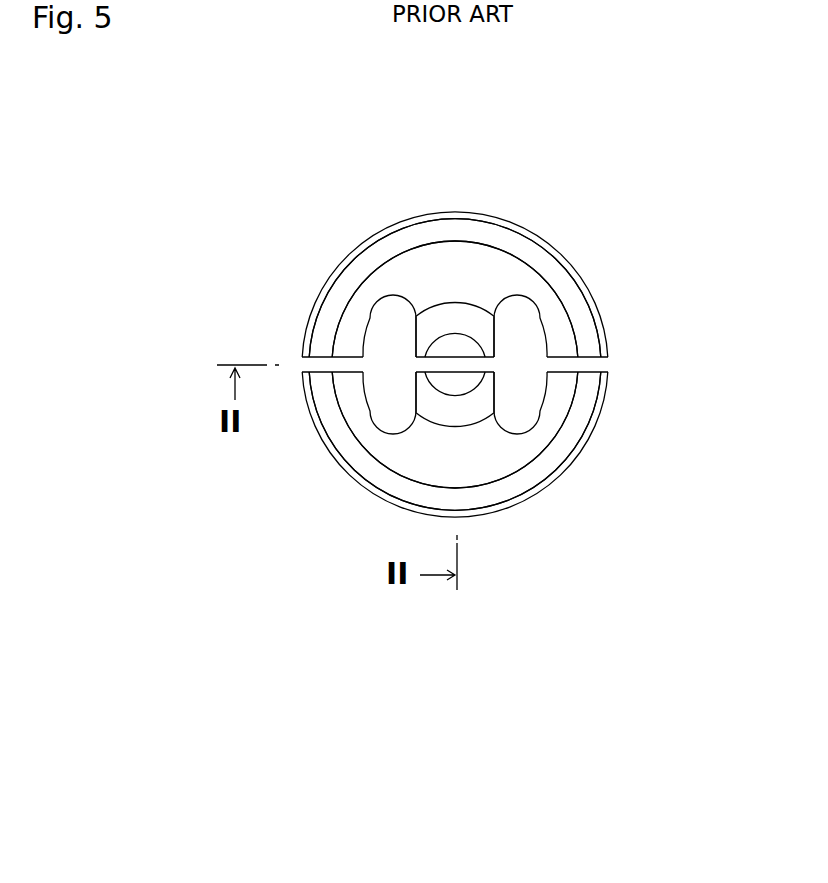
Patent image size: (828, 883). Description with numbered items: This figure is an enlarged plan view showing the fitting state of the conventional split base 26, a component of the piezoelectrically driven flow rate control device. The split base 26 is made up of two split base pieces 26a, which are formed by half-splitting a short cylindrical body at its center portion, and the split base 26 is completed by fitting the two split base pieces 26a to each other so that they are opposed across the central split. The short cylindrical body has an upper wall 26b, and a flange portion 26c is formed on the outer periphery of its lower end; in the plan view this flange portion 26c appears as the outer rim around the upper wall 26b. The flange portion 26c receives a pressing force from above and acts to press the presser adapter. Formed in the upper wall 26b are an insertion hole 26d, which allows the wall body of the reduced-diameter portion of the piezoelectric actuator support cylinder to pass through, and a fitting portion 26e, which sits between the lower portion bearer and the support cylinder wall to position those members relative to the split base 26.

The split base 26 is at (484, 351).
The split base piece 26a is at (540, 231).
The upper wall 26b is at (477, 265).
The flange portion 26c is at (578, 420).
The insertion hole 26d is at (385, 336).
The fitting portion 26e is at (460, 412).